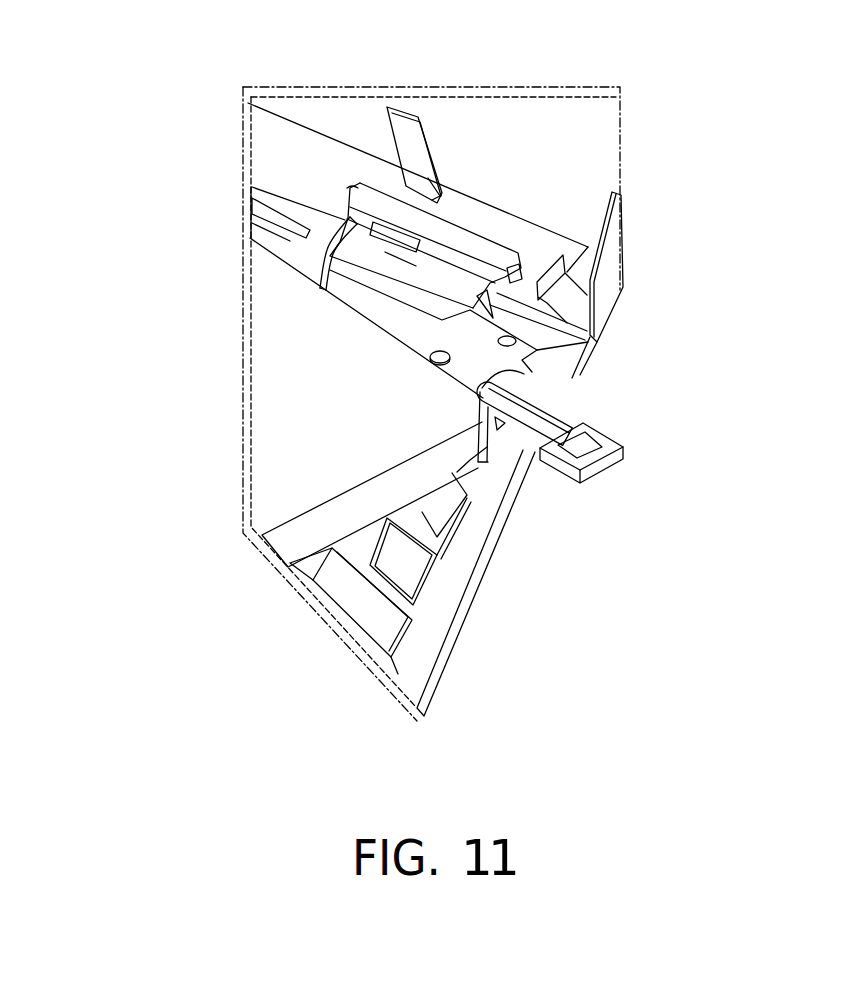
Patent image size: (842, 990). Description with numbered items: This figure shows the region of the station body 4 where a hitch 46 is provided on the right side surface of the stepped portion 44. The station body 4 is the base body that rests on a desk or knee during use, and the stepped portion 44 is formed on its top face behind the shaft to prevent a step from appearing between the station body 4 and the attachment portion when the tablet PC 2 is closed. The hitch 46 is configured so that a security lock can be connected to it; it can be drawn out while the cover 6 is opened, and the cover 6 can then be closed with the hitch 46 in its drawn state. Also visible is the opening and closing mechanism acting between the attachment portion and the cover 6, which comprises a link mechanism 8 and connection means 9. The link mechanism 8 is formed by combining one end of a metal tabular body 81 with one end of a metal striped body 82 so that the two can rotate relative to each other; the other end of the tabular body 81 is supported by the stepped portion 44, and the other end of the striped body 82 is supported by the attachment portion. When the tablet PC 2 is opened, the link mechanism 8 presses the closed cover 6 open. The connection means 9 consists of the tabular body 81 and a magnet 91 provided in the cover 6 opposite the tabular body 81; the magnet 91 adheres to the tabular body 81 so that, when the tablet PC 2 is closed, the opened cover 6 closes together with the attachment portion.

The tablet PC 2 is at (403, 487).
The station body 4 is at (452, 618).
The cover 6 is at (597, 232).
The link mechanism 8 is at (235, 254).
The tabular body 81 is at (348, 216).
The striped body 82 is at (348, 253).
The connection means 9 is at (423, 112).
The magnet 91 is at (408, 104).
The stepped portion 44 is at (508, 438).
The hitch 46 is at (613, 460).